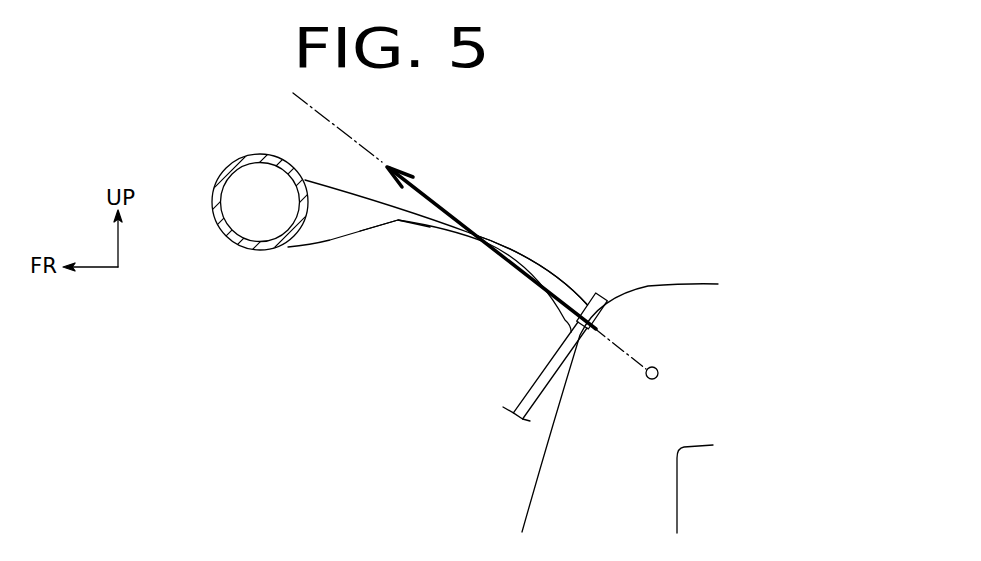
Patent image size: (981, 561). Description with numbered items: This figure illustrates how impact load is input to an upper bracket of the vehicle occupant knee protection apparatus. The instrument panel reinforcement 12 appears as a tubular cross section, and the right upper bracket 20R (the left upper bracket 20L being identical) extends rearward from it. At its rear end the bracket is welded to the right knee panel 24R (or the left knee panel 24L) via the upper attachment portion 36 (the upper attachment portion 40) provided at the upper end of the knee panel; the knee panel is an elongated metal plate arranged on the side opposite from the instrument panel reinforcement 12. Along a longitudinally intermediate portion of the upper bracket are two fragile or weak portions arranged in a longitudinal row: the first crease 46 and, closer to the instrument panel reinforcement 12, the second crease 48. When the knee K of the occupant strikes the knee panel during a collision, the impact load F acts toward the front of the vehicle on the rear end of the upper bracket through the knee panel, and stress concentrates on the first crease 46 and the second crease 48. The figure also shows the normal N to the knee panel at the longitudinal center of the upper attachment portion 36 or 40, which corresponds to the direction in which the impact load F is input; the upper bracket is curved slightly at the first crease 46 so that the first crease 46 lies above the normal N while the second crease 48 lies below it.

The instrument panel reinforcement 12 is at (245, 248).
The right upper bracket 20R is at (438, 259).
The left upper bracket 20L is at (330, 241).
The second crease 48 is at (399, 222).
The first crease 46 is at (500, 237).
The upper attachment portion 36 is at (649, 336).
The upper attachment portion 40 is at (600, 318).
The right knee panel 24R is at (469, 371).
The left knee panel 24L is at (525, 392).
The normal N is at (352, 140).
The impact load F is at (438, 205).
The knee K is at (650, 285).